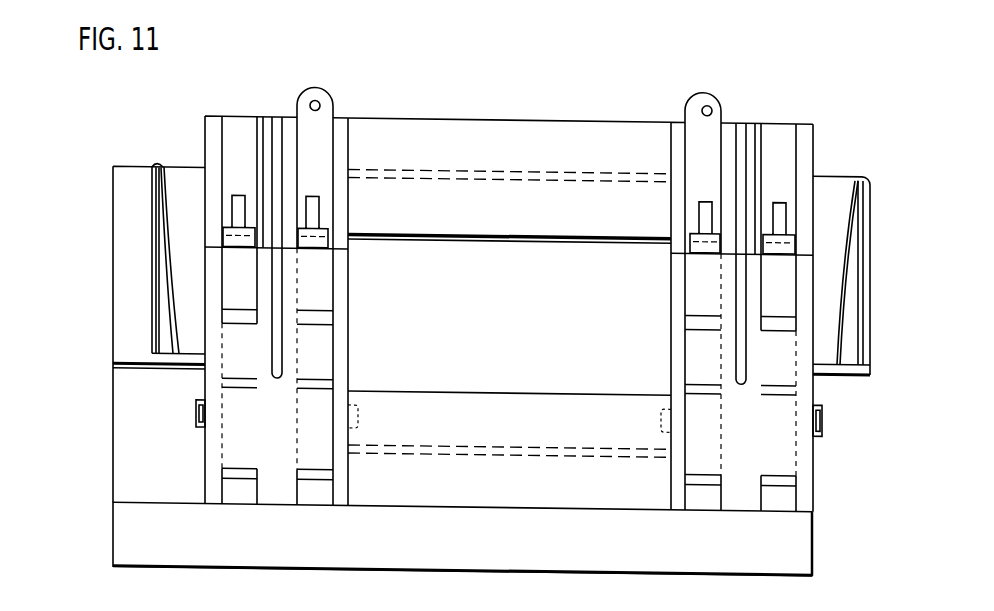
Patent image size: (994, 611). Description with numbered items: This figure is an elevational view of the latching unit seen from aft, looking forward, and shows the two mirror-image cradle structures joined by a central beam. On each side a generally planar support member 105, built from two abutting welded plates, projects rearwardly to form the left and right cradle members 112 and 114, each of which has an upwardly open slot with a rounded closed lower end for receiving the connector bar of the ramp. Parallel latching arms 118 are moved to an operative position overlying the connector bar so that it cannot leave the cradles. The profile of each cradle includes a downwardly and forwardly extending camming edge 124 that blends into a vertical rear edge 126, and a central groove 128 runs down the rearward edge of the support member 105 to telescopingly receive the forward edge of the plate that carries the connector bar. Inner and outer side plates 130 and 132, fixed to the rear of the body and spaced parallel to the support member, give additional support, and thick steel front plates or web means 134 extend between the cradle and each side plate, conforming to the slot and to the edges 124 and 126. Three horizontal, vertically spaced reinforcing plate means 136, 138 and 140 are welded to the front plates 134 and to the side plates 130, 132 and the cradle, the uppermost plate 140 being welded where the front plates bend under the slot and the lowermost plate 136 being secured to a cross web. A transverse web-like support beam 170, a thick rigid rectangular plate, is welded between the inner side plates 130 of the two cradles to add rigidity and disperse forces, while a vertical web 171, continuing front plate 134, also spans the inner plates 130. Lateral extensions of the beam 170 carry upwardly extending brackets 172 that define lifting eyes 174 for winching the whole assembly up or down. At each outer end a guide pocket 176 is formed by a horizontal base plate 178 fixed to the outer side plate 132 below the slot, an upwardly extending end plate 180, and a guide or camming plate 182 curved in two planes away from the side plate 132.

The support member 105 is at (755, 132).
The cradle member 112 is at (747, 450).
The cradle member 114 is at (265, 451).
The latching arms 118 is at (235, 241).
The camming edge 124 is at (263, 123).
The rear edge 126 is at (290, 148).
The groove 128 is at (277, 358).
The inner side plate 130 is at (341, 134).
The outer side plate 132 is at (213, 123).
The front plate or web means 134 is at (703, 279).
The lowermost reinforcing plate means 136 is at (715, 464).
The reinforcing plate means 138 is at (707, 385).
The uppermost reinforcing plate means 140 is at (703, 322).
The support beam 170 is at (538, 132).
The vertical web 171 is at (575, 427).
The brackets 172 is at (327, 99).
The lifting eyes 174 is at (310, 103).
The guide pocket 176 is at (182, 177).
The base plate 178 is at (170, 365).
The end plate 180 is at (132, 177).
The guide or camming plate 182 is at (155, 248).